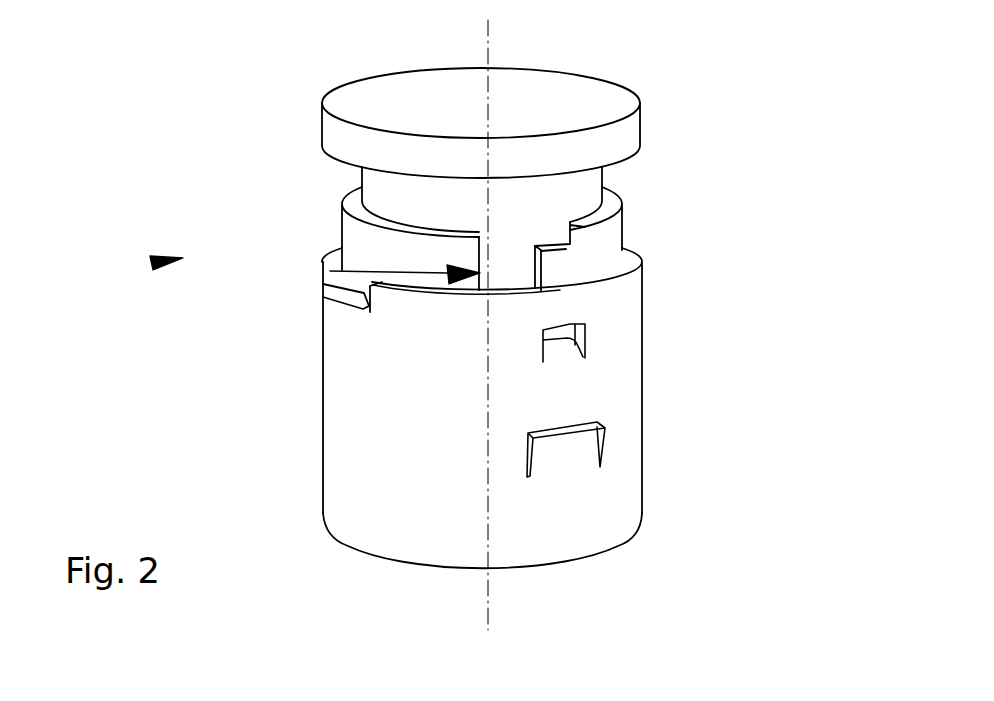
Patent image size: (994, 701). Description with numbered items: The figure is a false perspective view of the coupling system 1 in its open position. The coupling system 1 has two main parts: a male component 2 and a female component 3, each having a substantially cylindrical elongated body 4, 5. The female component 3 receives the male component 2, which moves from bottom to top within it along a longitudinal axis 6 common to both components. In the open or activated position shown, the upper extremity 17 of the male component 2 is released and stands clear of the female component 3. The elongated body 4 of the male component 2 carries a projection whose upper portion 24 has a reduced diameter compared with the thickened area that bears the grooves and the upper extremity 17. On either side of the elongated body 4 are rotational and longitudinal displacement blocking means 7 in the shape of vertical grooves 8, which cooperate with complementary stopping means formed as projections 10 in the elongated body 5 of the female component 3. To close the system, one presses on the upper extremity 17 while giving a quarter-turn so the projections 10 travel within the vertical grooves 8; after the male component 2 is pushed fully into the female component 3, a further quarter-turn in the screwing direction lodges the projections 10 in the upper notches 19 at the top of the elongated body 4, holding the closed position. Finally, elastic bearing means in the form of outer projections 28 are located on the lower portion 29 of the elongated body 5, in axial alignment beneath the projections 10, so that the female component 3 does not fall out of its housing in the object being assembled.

The coupling system 1 is at (150, 263).
The male component 2 is at (628, 128).
The female component 3 is at (323, 458).
The elongated body of the male component 4 is at (353, 210).
The elongated body of the female component 5 is at (360, 398).
The longitudinal axis 6 is at (490, 593).
The rotational and longitudinal displacement blocking means 7 is at (330, 271).
The vertical groove 8 is at (510, 273).
The projection 10 is at (558, 352).
The upper extremity of the male component 17 is at (395, 97).
The upper notch 19 is at (590, 233).
The upper portion of the projection 24 is at (568, 192).
The outer projection 28 is at (578, 455).
The lower portion of the elongated body of the female component 29 is at (597, 523).